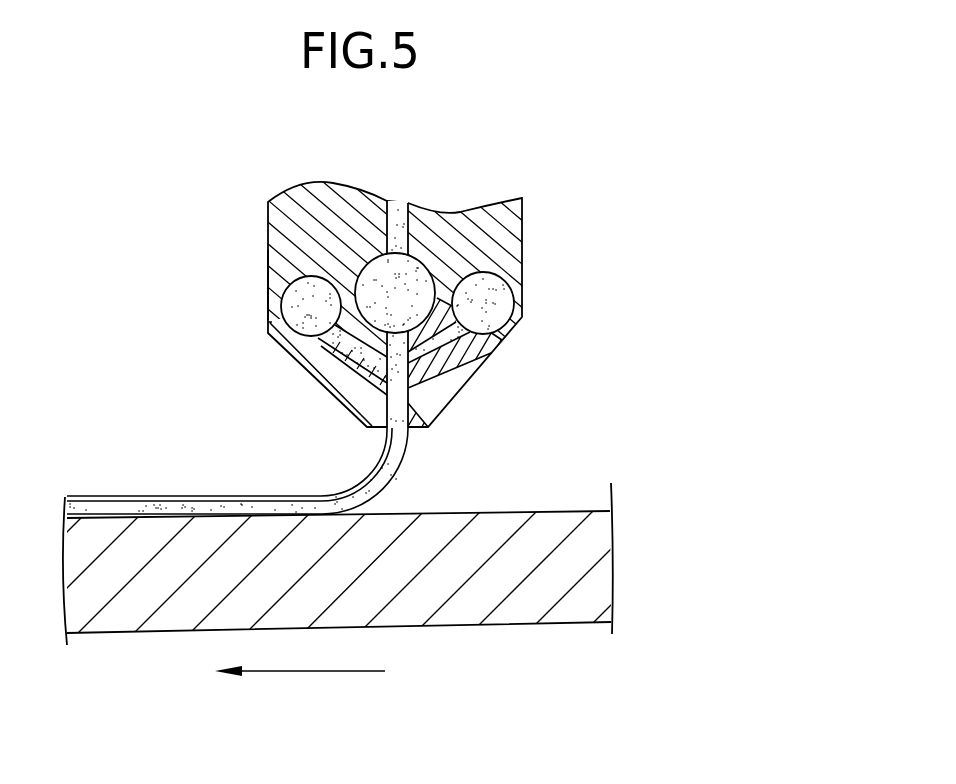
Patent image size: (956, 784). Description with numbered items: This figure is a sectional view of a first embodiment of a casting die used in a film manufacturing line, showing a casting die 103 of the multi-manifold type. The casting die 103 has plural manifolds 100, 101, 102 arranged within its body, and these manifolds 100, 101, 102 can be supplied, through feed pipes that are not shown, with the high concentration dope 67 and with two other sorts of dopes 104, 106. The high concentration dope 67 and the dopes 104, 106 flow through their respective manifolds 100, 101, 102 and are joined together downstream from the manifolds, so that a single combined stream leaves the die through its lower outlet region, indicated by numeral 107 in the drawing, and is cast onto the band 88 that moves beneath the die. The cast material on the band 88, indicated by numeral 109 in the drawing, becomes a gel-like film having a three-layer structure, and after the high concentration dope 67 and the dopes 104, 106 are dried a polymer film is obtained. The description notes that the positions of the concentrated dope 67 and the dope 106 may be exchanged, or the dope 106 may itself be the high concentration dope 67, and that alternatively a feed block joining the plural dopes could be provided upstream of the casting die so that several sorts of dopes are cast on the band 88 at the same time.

The manifold 100 is at (352, 252).
The high concentration dope 67 is at (410, 288).
The manifold 101 is at (488, 312).
The manifold 102 is at (296, 306).
The casting die 103 is at (266, 284).
The dope 104 is at (506, 332).
The dope 106 is at (314, 312).
The discharge outlet 107 is at (410, 392).
The adhesive bead 109 is at (138, 496).
The band 88 is at (593, 509).